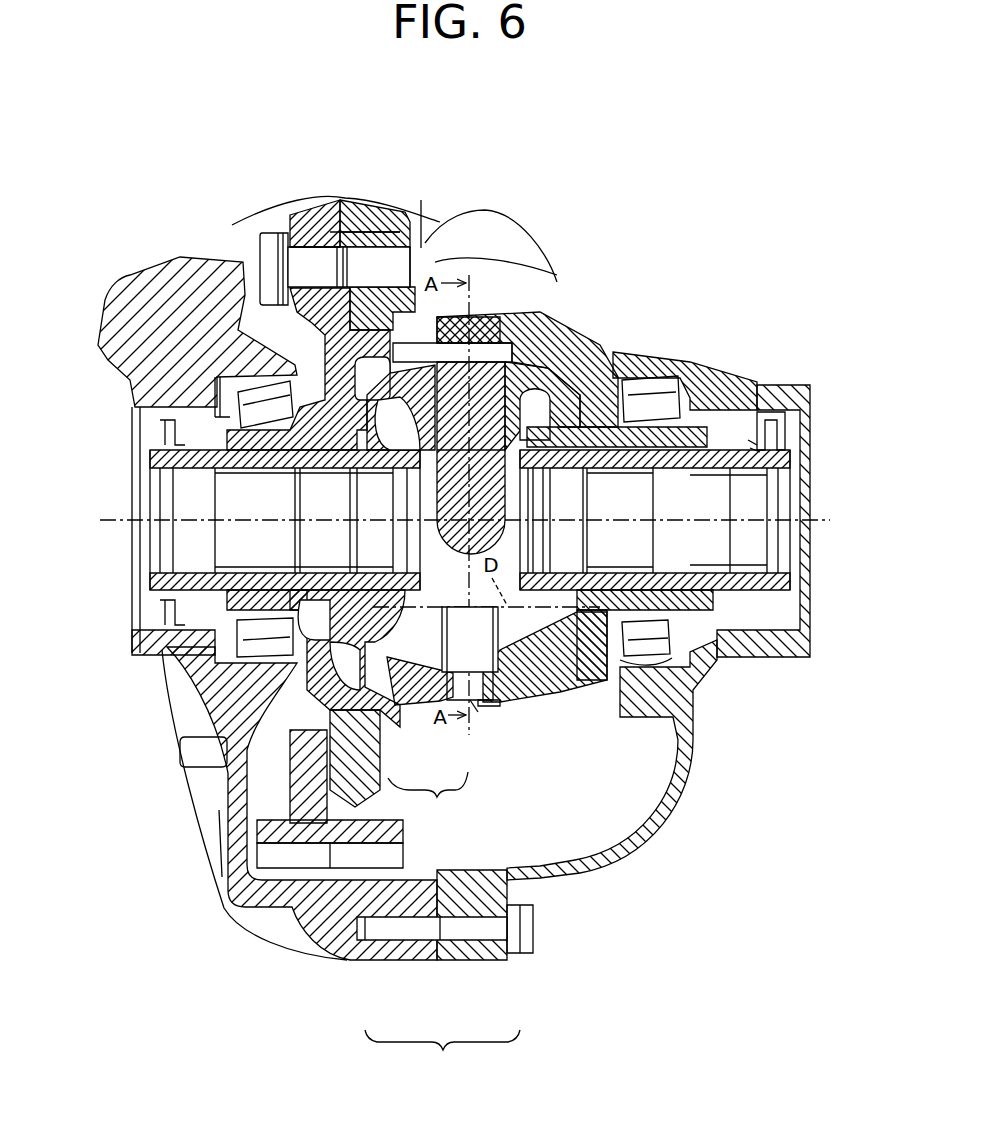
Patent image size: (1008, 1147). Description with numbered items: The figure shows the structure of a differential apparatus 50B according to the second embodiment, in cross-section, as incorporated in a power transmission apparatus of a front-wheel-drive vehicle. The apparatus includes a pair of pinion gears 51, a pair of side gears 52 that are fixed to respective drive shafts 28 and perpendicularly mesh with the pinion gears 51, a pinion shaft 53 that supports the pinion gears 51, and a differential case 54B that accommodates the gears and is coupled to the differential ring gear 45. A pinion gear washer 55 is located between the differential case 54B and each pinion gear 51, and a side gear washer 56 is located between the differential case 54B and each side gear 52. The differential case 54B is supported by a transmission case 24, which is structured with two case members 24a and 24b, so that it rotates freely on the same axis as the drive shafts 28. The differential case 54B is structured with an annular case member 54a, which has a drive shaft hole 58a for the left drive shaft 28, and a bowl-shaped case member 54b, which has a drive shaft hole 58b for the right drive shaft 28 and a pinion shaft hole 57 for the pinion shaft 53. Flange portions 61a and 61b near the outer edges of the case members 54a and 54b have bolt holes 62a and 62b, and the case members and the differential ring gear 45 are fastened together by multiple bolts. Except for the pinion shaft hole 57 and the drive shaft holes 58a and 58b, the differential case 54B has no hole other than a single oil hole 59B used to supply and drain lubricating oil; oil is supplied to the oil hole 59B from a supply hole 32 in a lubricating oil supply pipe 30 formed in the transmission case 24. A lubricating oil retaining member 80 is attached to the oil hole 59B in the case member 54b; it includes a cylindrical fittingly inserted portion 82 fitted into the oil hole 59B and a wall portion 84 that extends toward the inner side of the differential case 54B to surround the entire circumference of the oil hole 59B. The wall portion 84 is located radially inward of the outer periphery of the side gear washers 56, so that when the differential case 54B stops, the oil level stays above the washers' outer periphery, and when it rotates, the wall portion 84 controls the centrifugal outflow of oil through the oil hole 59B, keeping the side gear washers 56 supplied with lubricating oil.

The transmission case 24 is at (442, 1054).
The case member 24a is at (133, 318).
The case member 24b is at (480, 962).
The drive shaft 28 is at (100, 520).
The lubricating oil supply pipe 30 is at (515, 272).
The supply hole 32 is at (497, 303).
The differential ring gear 45 is at (262, 233).
The differential apparatus 50B is at (692, 241).
The pinion gear 51 is at (490, 440).
The side gear 52 is at (615, 425).
The pinion shaft 53 is at (562, 405).
The case member 54a is at (383, 748).
The case member 54b is at (385, 722).
The differential case 54B is at (428, 794).
The pinion gear washer 55 is at (540, 365).
The side gear washer 56 is at (640, 420).
The pinion shaft hole 57 is at (563, 345).
The drive shaft hole 58a is at (205, 603).
The drive shaft hole 58b is at (736, 437).
The oil hole 59B is at (478, 706).
The flange portion 61a is at (350, 225).
The flange portion 61b is at (368, 225).
The bolt hole 62a is at (319, 242).
The bolt hole 62b is at (422, 252).
The lubricating oil retaining member 80 is at (512, 639).
The fittingly inserted portion 82 is at (478, 705).
The wall portion 84 is at (436, 617).